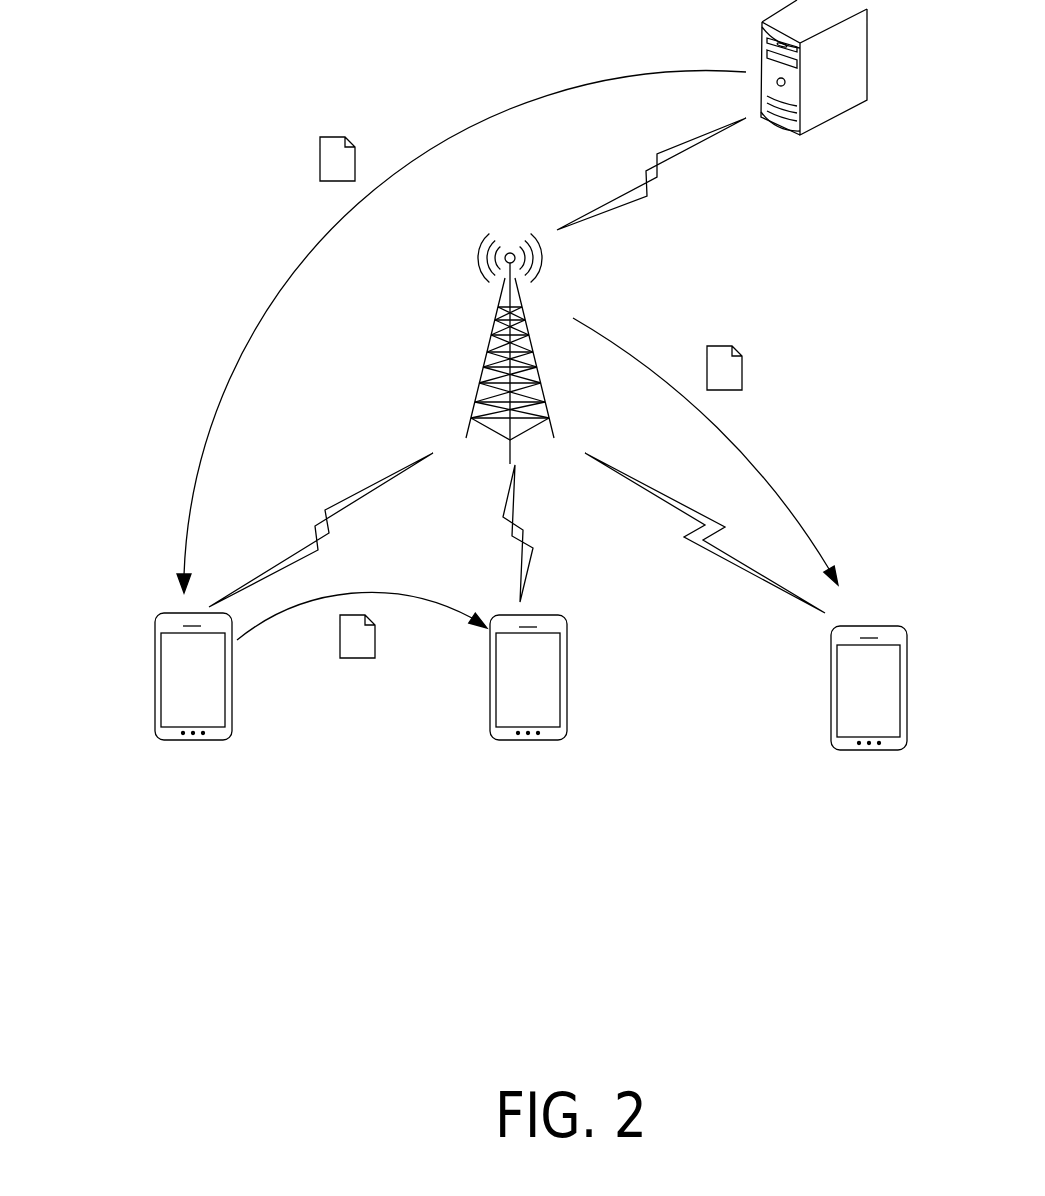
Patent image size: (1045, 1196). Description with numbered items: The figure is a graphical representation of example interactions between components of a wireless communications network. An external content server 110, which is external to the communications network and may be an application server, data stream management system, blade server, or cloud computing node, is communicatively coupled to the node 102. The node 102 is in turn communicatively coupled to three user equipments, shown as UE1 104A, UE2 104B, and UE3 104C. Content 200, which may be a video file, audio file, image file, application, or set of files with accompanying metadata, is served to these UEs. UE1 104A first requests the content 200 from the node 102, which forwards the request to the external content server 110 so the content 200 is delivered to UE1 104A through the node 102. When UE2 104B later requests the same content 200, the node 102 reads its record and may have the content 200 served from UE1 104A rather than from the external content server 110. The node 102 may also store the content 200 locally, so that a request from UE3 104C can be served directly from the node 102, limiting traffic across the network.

The external content server 110 is at (757, 19).
The node 102 is at (464, 321).
The UE1 104A is at (155, 692).
The UE2 104B is at (490, 682).
The UE3 104C is at (830, 680).
The content 200 is at (314, 152).